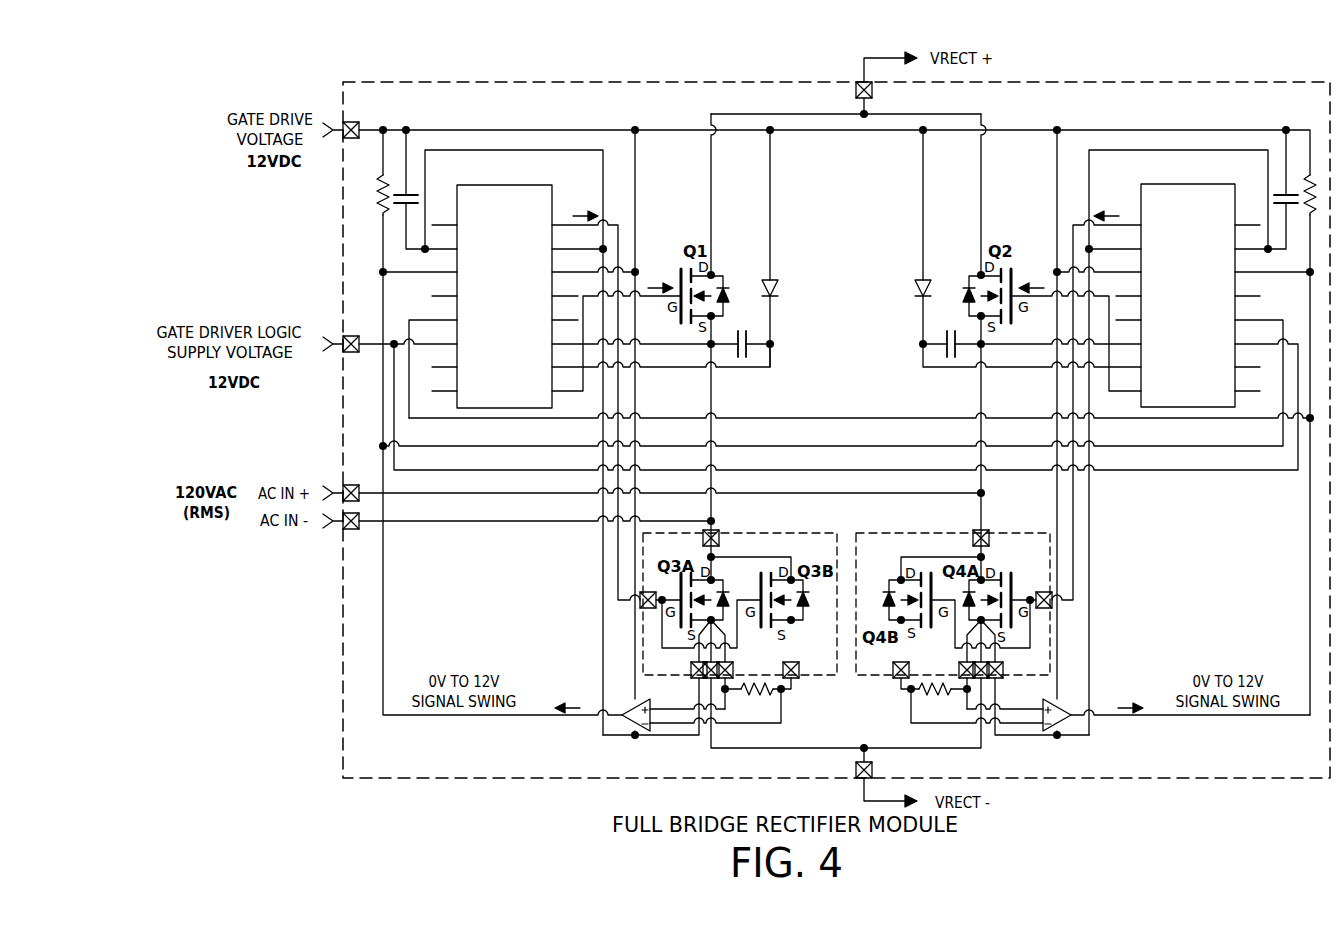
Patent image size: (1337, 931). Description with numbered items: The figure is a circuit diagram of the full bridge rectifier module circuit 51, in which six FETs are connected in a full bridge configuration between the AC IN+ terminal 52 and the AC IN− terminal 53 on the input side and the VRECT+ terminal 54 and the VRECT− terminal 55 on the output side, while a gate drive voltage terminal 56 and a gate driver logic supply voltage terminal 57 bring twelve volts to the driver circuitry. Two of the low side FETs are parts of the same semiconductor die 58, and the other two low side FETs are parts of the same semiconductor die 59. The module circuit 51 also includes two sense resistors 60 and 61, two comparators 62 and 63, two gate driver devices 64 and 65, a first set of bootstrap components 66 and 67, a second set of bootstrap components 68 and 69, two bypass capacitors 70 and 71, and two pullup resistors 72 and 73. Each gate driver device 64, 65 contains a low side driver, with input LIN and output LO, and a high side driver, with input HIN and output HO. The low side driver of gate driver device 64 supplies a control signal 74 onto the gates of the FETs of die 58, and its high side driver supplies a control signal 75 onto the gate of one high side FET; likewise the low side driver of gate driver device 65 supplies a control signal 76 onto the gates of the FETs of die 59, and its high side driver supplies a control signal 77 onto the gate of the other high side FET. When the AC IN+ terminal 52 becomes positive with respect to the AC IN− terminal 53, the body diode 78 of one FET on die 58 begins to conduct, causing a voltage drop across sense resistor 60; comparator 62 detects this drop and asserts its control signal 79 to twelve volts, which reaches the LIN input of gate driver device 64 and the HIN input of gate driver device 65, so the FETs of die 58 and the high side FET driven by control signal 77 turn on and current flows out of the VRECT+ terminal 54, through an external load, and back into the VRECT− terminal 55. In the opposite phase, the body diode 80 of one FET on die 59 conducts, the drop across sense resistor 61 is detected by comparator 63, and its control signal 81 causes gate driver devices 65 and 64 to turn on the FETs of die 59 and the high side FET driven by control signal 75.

The full bridge rectifier module circuit 51 is at (512, 82).
The AC IN+ terminal 52 is at (353, 485).
The AC IN− terminal 53 is at (354, 529).
The rectified output positive terminal 54 is at (856, 91).
The rectified output negative terminal 55 is at (856, 769).
The gate drive voltage terminal 56 is at (353, 122).
The gate driver logic supply voltage terminal 57 is at (353, 336).
The semiconductor die 58 is at (776, 532).
The semiconductor die 59 is at (911, 532).
The sense resistor 60 is at (760, 697).
The sense resistor 61 is at (932, 697).
The comparator 62 is at (636, 737).
The comparator 63 is at (1058, 737).
The gate driver device 64 is at (503, 184).
The gate driver device 65 is at (1198, 184).
The bootstrap component 66 is at (742, 332).
The bootstrap component 67 is at (779, 290).
The bootstrap component 68 is at (951, 332).
The bootstrap component 69 is at (915, 290).
The bypass capacitor 70 is at (402, 190).
The bypass capacitor 71 is at (1293, 188).
The pullup resistor 72 is at (383, 215).
The pullup resistor 73 is at (1310, 215).
The control signal 74 is at (580, 214).
The control signal 75 is at (655, 284).
The control signal 76 is at (1113, 214).
The control signal 77 is at (1040, 284).
The body diode 78 is at (808, 603).
The control signal 79 is at (567, 706).
The body diode 80 is at (886, 602).
The control signal 81 is at (1132, 706).